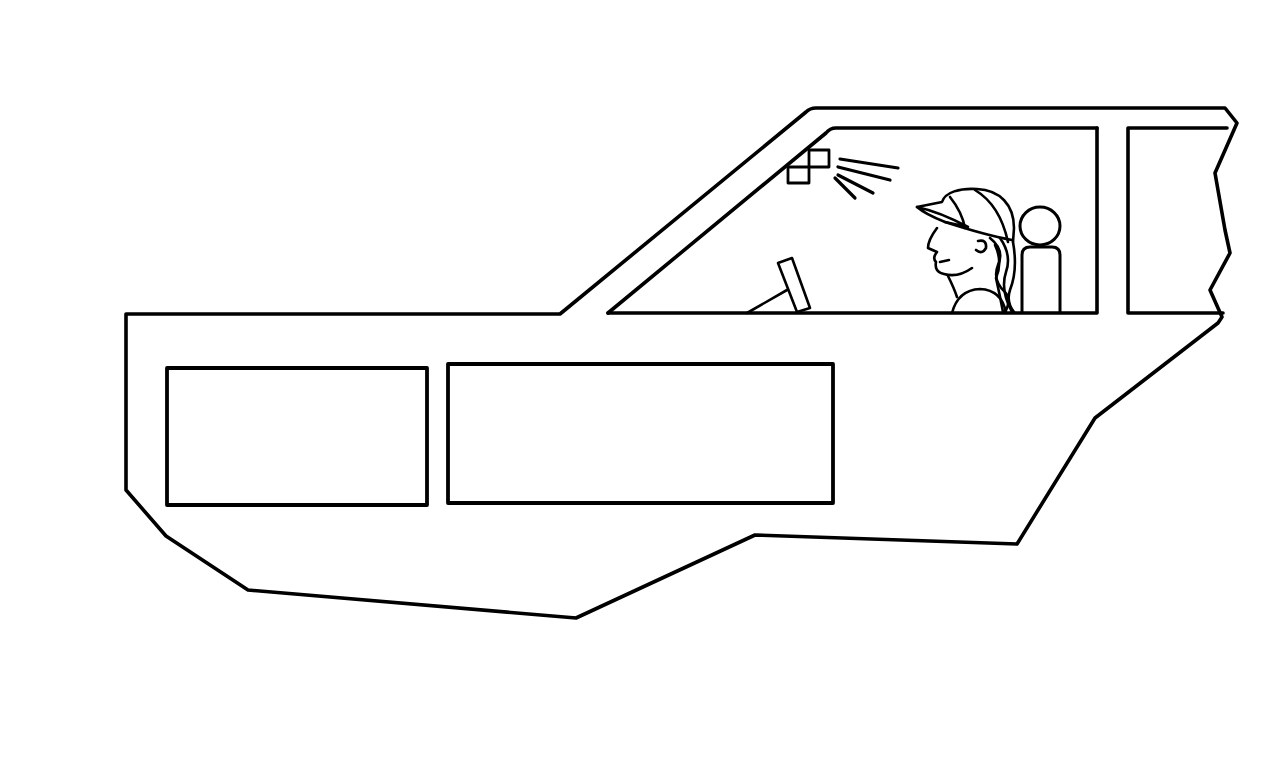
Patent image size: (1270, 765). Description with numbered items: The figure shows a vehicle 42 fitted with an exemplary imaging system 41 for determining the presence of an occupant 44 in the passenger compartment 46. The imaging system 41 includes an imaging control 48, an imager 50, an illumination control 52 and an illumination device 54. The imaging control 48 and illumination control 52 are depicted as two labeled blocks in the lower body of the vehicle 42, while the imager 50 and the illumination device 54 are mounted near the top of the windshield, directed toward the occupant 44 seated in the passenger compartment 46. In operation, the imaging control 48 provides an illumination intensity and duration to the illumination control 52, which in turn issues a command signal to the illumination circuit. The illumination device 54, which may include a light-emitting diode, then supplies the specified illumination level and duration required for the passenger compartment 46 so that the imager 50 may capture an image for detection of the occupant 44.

The imaging system 41 is at (472, 69).
The vehicle 42 is at (341, 315).
The occupant 44 is at (980, 190).
The passenger compartment 46 is at (1048, 147).
The imaging control 48 is at (305, 505).
The imager 50 is at (788, 180).
The illumination control 52 is at (552, 505).
The illumination device 54 is at (838, 150).